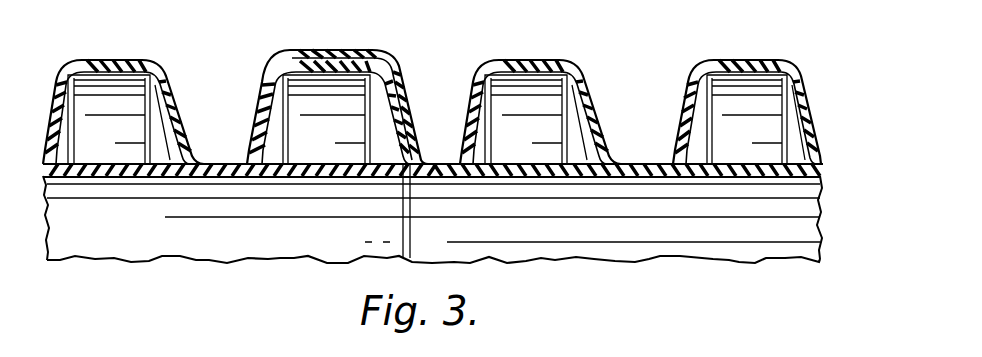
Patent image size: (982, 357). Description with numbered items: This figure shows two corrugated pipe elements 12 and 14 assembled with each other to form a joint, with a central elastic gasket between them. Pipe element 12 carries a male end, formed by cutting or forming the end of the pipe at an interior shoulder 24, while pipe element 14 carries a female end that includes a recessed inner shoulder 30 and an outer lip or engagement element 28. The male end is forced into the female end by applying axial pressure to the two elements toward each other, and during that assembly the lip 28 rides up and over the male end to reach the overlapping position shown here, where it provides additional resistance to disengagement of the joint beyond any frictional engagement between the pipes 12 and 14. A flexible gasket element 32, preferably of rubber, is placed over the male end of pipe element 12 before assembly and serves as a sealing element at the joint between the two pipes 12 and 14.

The pipe element 12 is at (123, 52).
The pipe element 14 is at (745, 55).
The interior shoulder 24 is at (405, 178).
The lip or engagement element 28 is at (270, 57).
The recessed inner shoulder 30 is at (413, 178).
The flexible gasket element 32 is at (336, 50).